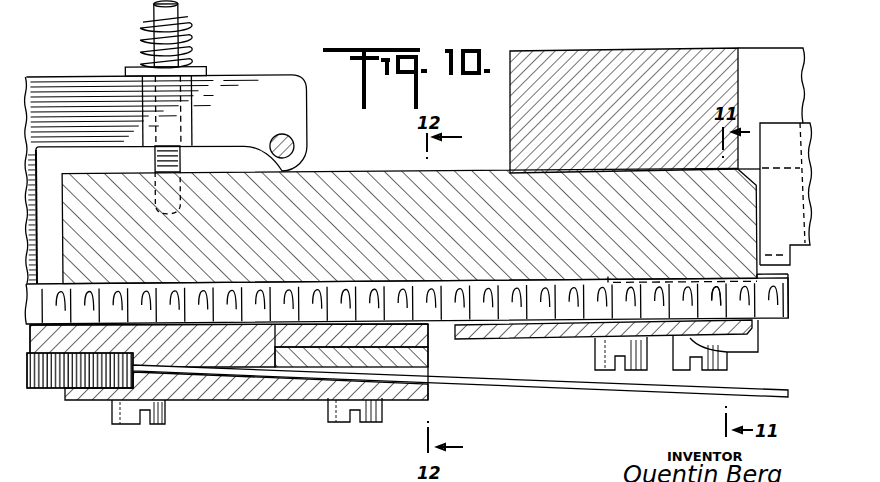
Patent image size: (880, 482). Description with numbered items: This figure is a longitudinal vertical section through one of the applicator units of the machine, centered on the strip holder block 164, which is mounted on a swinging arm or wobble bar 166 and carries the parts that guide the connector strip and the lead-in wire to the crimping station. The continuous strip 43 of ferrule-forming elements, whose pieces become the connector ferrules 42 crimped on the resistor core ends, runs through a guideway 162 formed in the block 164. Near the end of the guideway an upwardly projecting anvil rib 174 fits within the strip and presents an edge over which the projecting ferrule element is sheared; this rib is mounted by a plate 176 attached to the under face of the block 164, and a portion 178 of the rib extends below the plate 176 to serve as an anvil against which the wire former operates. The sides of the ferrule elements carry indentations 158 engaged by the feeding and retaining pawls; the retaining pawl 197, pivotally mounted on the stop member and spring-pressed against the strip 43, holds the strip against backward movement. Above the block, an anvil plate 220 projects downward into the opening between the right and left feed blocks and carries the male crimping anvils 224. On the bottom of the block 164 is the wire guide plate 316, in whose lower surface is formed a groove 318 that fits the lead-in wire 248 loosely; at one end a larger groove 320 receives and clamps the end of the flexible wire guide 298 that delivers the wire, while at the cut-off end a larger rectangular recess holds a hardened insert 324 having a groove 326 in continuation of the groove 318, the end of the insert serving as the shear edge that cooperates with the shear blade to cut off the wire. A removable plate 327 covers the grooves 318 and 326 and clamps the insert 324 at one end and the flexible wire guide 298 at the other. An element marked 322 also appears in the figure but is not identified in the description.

The retaining pawl 197 is at (42, 95).
The wobble bar 166 is at (668, 68).
The anvil plate 220 is at (780, 133).
The crimping anvils 224 is at (775, 247).
The strip holder block 164 is at (537, 195).
The continuous strip 43 is at (52, 283).
The larger groove 320 is at (98, 355).
The wire guide plate 316 is at (227, 343).
The block step 322 is at (322, 347).
The hardened insert 324 is at (360, 353).
The guideway 162 is at (423, 283).
The anvil rib 174 is at (608, 278).
The indentations 158 is at (696, 283).
The connector ferrule 42 is at (783, 298).
The groove 318 is at (178, 367).
The cutting edge 326 is at (403, 372).
The plate 176 is at (535, 337).
The anvil portion of rib 178 is at (742, 347).
The flexible wire guide 298 is at (47, 378).
The lead-in wire 248 is at (218, 372).
The removable plate 327 is at (278, 385).